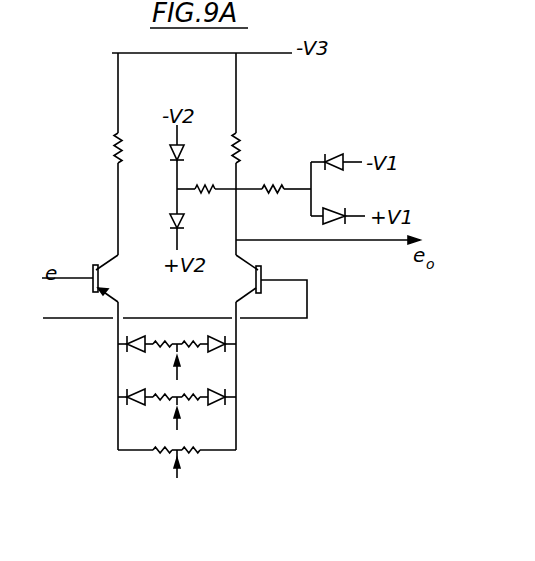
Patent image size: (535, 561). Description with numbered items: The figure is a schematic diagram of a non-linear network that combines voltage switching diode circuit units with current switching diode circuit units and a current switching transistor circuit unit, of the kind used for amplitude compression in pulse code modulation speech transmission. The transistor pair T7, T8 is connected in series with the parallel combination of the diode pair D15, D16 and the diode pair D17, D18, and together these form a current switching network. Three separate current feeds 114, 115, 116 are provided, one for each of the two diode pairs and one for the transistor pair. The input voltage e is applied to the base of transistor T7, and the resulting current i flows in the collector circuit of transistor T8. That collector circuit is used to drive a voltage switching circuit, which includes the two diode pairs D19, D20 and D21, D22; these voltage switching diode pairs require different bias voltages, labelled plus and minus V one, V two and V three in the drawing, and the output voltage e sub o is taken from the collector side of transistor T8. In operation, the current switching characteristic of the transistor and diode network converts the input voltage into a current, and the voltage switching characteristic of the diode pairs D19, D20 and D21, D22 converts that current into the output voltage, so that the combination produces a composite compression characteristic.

The diode D15 is at (141, 358).
The diode D16 is at (216, 358).
The diode D17 is at (141, 412).
The diode D18 is at (219, 410).
The diode D19 is at (341, 149).
The diode D20 is at (341, 203).
The diode D21 is at (200, 157).
The diode D22 is at (200, 225).
The transistor T7 is at (111, 278).
The transistor T8 is at (239, 278).
The current feed 114 is at (165, 372).
The current feed 115 is at (195, 424).
The current feed 116 is at (199, 472).